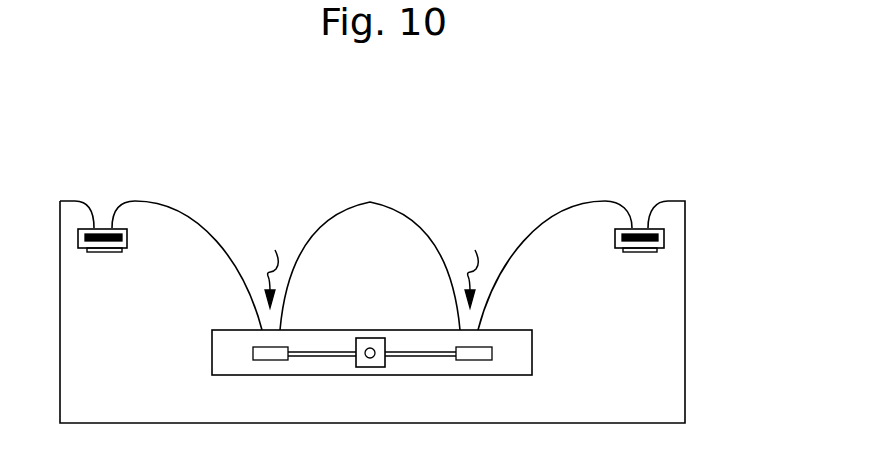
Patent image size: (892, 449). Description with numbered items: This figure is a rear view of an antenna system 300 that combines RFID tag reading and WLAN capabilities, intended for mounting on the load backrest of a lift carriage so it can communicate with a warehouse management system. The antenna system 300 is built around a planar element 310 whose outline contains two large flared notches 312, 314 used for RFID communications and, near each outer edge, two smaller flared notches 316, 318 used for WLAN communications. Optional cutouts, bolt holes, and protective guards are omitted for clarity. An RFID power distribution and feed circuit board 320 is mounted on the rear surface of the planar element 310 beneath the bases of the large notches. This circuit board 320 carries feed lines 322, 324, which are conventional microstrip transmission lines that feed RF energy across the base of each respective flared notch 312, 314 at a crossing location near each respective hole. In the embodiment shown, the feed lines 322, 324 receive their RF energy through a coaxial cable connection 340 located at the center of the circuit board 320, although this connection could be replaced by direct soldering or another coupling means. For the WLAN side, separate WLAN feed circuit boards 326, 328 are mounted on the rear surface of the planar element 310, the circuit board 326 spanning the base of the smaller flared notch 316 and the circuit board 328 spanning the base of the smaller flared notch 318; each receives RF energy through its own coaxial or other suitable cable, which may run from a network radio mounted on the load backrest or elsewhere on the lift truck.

The antenna system 300 is at (716, 126).
The planar element 310 is at (140, 370).
The flared notch 312 is at (271, 268).
The flared notch 314 is at (471, 268).
The smaller flared notch 316 is at (102, 212).
The smaller flared notch 318 is at (639, 212).
The RFID power distribution and feed circuit board 320 is at (532, 358).
The feed line 322 is at (326, 352).
The feed line 324 is at (412, 352).
The WLAN feed circuit board 326 is at (103, 252).
The WLAN feed circuit board 328 is at (640, 252).
The coaxial cable connection 340 is at (367, 367).